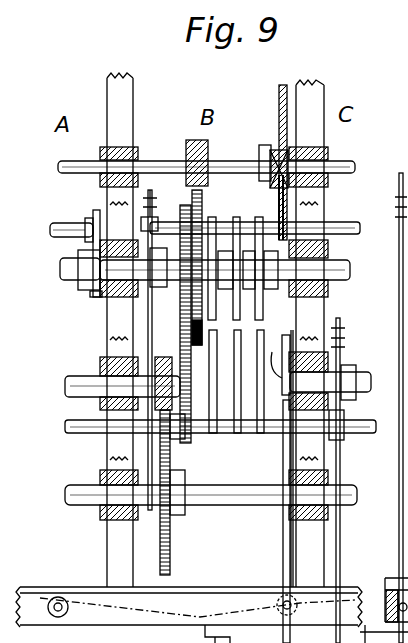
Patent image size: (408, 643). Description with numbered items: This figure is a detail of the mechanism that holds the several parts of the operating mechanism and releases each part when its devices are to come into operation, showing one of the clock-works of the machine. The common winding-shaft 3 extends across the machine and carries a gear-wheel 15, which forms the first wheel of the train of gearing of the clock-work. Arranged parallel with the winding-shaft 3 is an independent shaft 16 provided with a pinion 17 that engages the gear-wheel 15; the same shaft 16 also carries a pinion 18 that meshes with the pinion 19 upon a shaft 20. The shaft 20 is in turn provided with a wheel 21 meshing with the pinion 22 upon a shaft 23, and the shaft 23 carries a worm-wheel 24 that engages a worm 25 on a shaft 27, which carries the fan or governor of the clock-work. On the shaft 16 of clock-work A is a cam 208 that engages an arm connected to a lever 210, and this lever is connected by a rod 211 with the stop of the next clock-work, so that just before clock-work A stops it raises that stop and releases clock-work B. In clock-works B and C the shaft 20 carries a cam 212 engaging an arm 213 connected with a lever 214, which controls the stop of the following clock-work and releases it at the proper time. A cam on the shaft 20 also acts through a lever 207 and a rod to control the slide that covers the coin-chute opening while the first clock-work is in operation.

The winding-shaft 3 is at (237, 505).
The gear-wheel 15 is at (170, 553).
The independent shaft 16 is at (77, 380).
The pinion 17 is at (164, 375).
The pinion 18 is at (197, 345).
The pinion 19 is at (180, 296).
The shaft 20 is at (62, 273).
The wheel 21 is at (198, 222).
The pinion 22 is at (188, 143).
The shaft 23 is at (68, 160).
The worm-wheel 24 is at (279, 100).
The worm 25 is at (276, 184).
The shaft 27 is at (283, 550).
The lever 207 is at (93, 216).
The cam 208 is at (95, 297).
The lever 210 is at (152, 210).
The rod 211 is at (150, 330).
The cam 212 is at (284, 338).
The arm 213 is at (294, 335).
The lever 214 is at (341, 332).